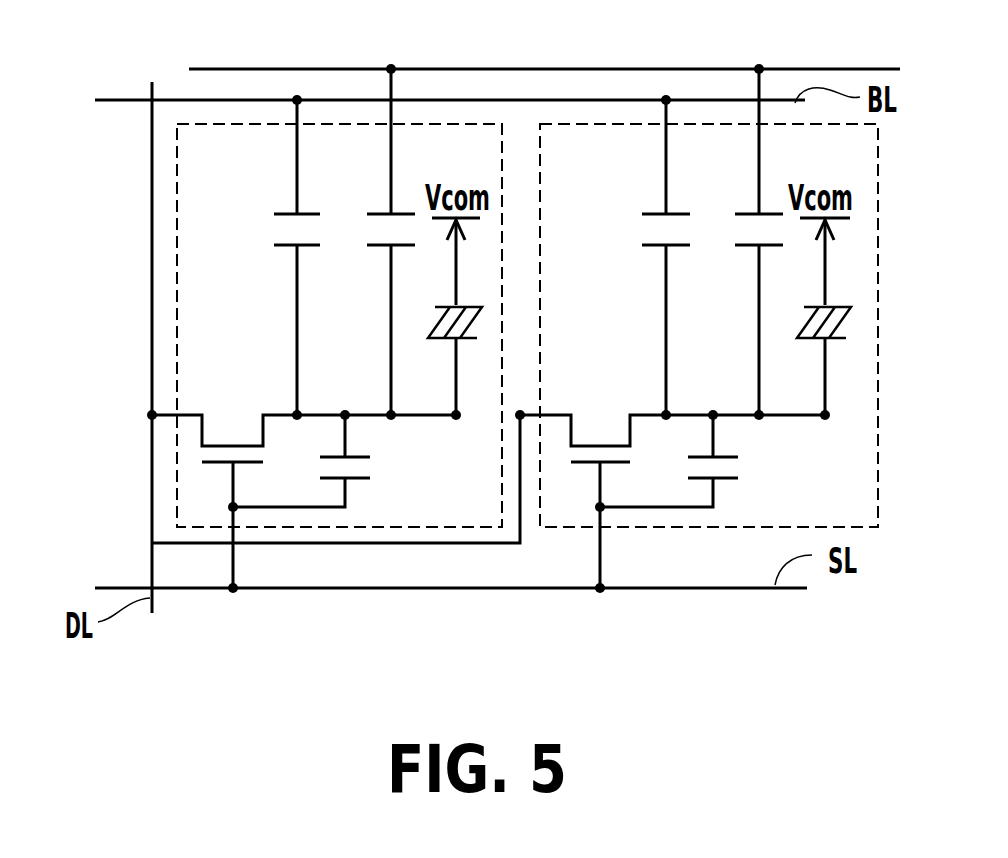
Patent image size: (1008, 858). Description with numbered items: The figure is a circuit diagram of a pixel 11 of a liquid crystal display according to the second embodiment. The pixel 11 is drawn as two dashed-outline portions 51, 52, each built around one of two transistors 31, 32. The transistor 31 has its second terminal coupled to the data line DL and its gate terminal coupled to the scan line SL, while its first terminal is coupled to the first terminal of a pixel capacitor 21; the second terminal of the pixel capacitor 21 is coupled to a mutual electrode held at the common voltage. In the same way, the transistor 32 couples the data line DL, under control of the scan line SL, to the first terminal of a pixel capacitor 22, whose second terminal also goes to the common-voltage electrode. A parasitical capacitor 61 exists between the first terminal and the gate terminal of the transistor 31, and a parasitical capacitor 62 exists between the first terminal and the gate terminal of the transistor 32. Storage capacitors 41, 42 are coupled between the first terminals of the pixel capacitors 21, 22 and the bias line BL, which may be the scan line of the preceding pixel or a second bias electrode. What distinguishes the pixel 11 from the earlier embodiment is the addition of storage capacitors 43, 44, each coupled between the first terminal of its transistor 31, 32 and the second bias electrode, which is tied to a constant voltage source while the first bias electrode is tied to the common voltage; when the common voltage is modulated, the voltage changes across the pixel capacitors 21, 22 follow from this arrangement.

The pixel 11 is at (836, 662).
The first pixel unit 51 is at (239, 123).
The second pixel unit 52 is at (603, 124).
The transistor 31 is at (234, 422).
The transistor 32 is at (602, 422).
The storage capacitor 41 is at (283, 230).
The storage capacitor 42 is at (640, 230).
The storage capacitor 43 is at (376, 230).
The storage capacitor 44 is at (743, 230).
The pixel capacitor 21 is at (437, 318).
The pixel capacitor 22 is at (805, 318).
The parasitical capacitor 61 is at (357, 480).
The parasitical capacitor 62 is at (743, 467).